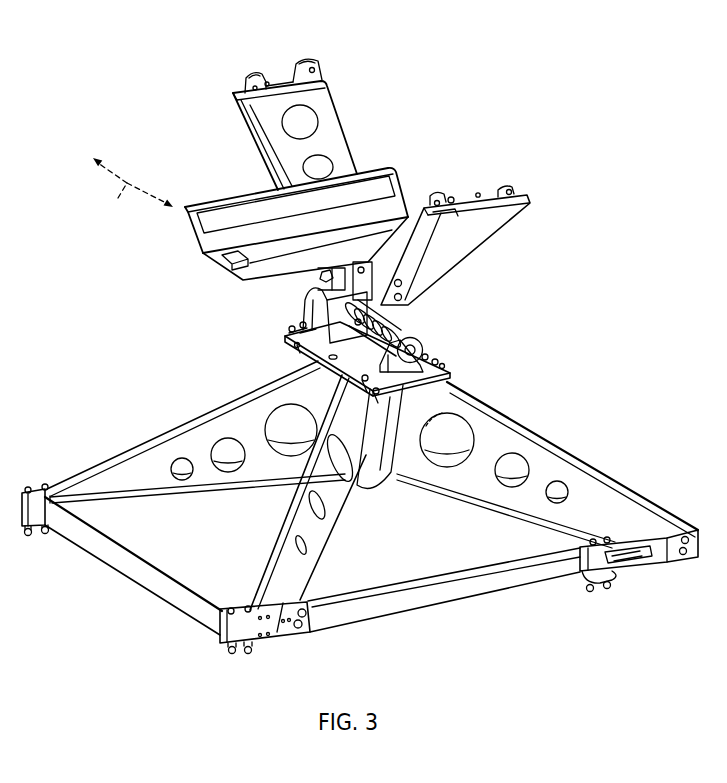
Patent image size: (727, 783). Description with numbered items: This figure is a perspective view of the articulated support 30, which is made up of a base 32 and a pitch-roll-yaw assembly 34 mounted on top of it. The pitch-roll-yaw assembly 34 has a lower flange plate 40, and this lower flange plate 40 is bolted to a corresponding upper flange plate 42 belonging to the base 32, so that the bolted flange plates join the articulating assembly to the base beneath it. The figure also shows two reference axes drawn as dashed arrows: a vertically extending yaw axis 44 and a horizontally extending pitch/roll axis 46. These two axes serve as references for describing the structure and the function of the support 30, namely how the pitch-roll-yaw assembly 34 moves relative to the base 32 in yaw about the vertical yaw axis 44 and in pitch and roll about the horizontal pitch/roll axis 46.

The support 30 is at (137, 58).
The base 32 is at (145, 400).
The pitch-roll-yaw assembly 34 is at (170, 276).
The lower flange plate 40 is at (445, 374).
The upper flange plate 42 is at (410, 345).
The yaw axis 44 is at (365, 67).
The pitch/roll axis 46 is at (118, 198).